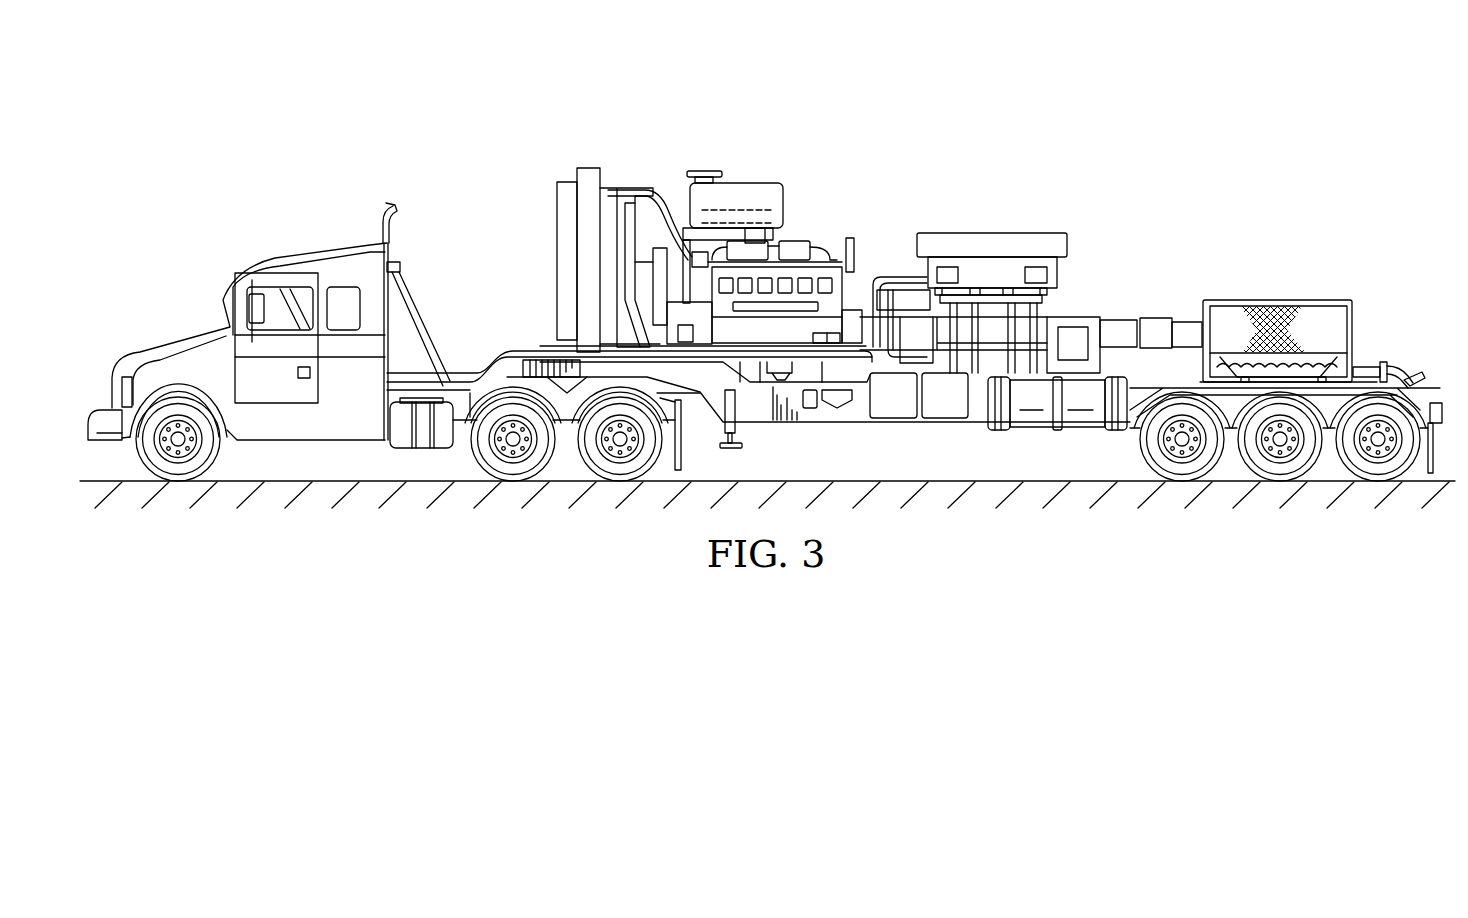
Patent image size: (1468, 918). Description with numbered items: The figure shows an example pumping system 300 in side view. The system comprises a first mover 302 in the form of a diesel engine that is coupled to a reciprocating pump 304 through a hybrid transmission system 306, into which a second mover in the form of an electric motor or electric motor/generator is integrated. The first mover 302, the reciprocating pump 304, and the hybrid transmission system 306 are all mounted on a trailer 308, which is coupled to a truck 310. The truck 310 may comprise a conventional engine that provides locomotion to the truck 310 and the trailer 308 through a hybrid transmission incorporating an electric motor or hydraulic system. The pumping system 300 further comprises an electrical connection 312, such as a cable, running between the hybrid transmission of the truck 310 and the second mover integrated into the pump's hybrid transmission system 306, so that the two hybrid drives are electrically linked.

The pumping system 300 is at (386, 80).
The first mover 302 is at (807, 270).
The reciprocating pump 304 is at (1277, 300).
The hybrid transmission system 306 is at (992, 233).
The trailer 308 is at (852, 425).
The truck 310 is at (307, 250).
The electrical connection 312 is at (505, 355).